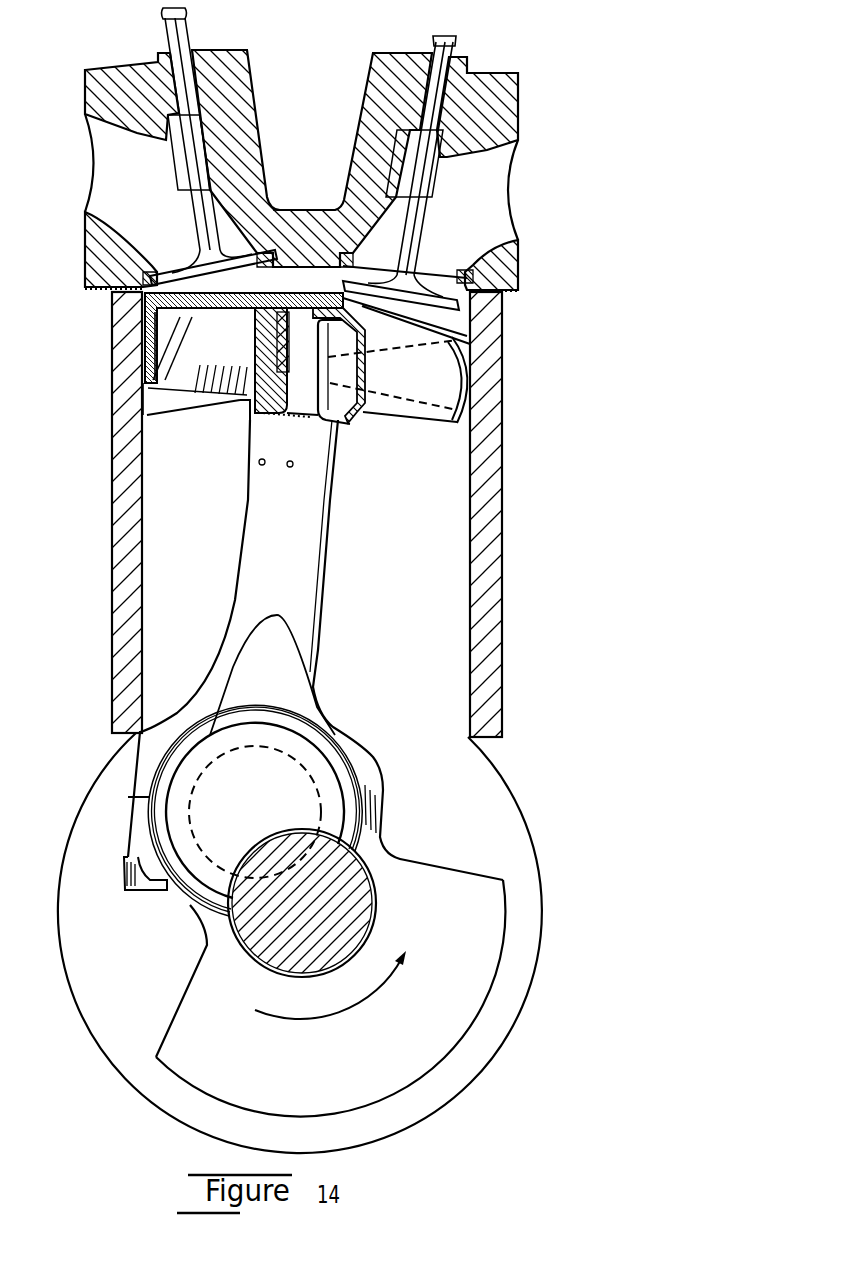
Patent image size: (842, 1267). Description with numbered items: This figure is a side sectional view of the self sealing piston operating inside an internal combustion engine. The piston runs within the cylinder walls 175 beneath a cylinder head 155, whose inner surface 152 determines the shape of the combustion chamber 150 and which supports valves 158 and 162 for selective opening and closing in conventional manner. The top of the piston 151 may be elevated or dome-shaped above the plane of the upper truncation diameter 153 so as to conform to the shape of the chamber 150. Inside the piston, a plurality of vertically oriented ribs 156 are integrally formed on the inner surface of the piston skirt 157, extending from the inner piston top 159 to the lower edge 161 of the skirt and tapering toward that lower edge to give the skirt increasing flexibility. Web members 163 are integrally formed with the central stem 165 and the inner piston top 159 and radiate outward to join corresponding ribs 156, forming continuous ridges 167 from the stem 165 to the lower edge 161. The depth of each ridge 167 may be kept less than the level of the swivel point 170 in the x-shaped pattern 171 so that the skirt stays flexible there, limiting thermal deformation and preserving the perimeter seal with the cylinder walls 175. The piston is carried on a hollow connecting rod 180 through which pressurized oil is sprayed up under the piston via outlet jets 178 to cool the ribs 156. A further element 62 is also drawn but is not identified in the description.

The pin retainer cap 62 is at (458, 427).
The combustion chamber 150 is at (313, 280).
The top of the piston 151 is at (263, 288).
The inner surface of the cylinder head 152 is at (328, 245).
The upper truncation diameter 153 is at (430, 328).
The cylinder head 155 is at (250, 73).
The ribs 156 is at (147, 418).
The piston skirt 157 is at (150, 386).
The valve 158 is at (190, 216).
The inner piston top 159 is at (203, 322).
The lower edge of the skirt 161 is at (233, 397).
The valve 162 is at (420, 226).
The web members 163 is at (178, 320).
The central stem 165 is at (250, 417).
The continuous ridge 167 is at (185, 342).
The swivel point 170 is at (337, 418).
The x-shaped pattern 171 is at (390, 350).
The cylinder walls 175 is at (140, 548).
The outlet jets 178 is at (290, 468).
The hollow connecting rod 180 is at (316, 505).